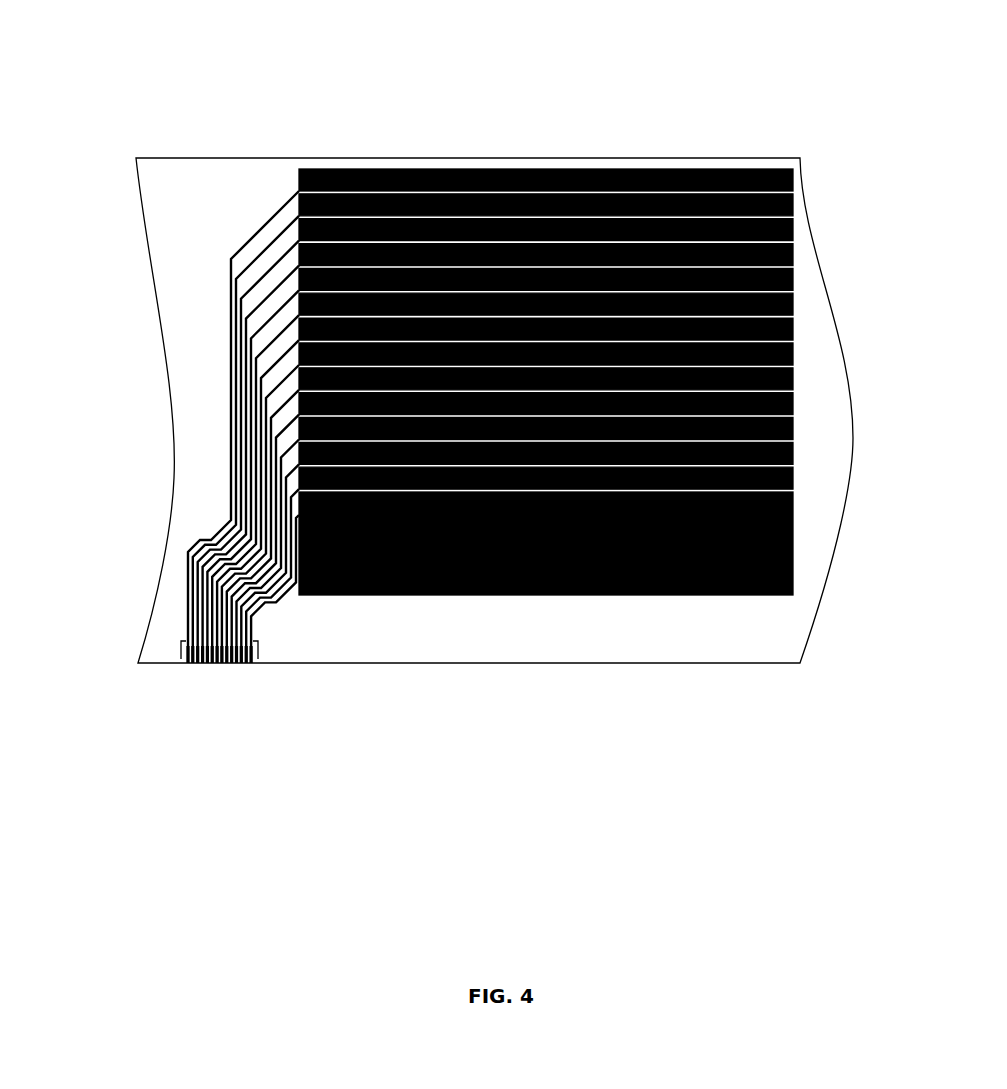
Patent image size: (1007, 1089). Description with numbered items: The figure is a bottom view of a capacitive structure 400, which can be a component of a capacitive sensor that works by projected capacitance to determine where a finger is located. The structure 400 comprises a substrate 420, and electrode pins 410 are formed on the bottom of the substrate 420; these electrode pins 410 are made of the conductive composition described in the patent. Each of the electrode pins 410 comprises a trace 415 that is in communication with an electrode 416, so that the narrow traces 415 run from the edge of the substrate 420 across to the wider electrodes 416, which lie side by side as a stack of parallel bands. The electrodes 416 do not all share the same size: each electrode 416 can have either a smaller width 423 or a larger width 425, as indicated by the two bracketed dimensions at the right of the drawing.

The structure 400 is at (675, 93).
The electrode pins 410 is at (107, 152).
The trace 415 is at (287, 142).
The electrode 416 is at (788, 142).
The substrate 420 is at (313, 658).
The width 423 is at (803, 158).
The width 425 is at (805, 477).